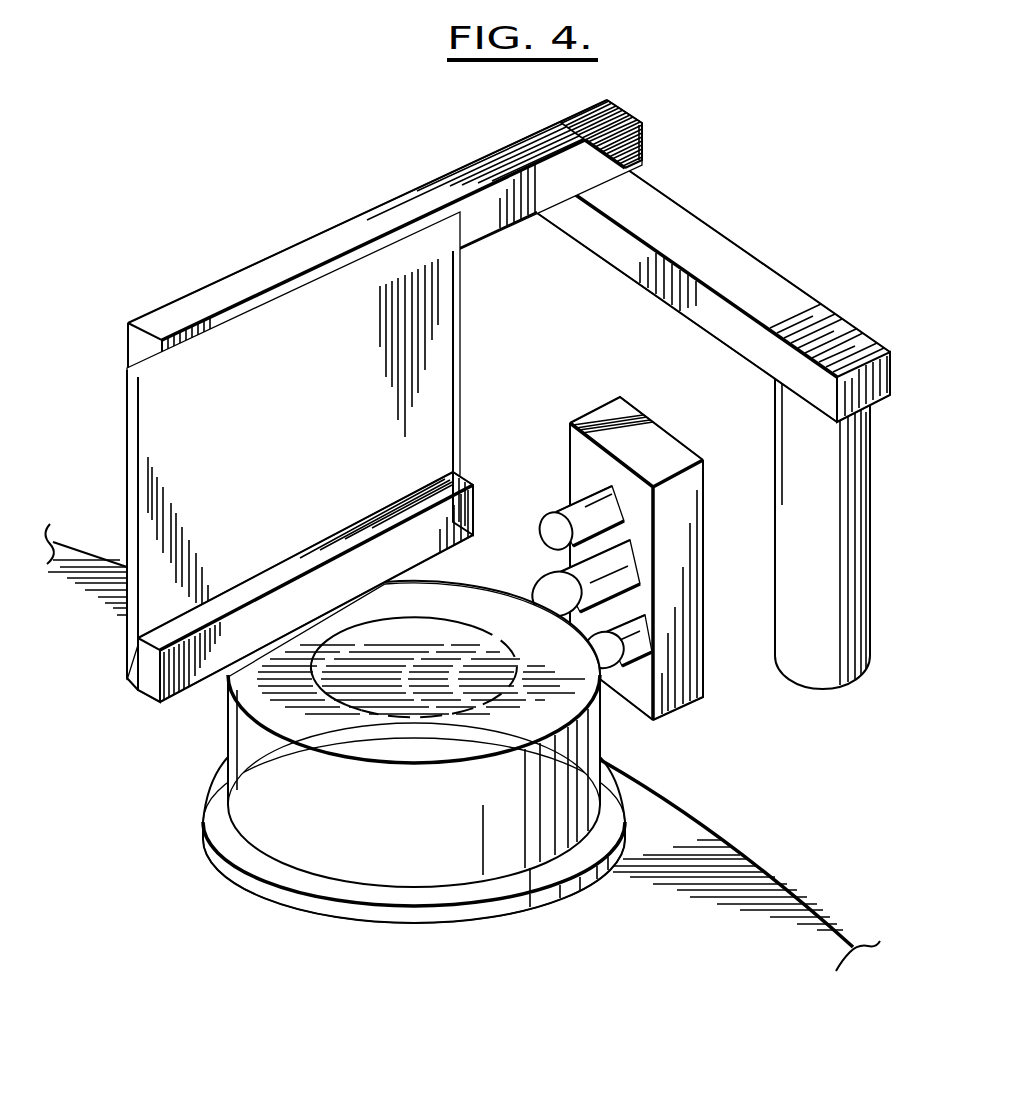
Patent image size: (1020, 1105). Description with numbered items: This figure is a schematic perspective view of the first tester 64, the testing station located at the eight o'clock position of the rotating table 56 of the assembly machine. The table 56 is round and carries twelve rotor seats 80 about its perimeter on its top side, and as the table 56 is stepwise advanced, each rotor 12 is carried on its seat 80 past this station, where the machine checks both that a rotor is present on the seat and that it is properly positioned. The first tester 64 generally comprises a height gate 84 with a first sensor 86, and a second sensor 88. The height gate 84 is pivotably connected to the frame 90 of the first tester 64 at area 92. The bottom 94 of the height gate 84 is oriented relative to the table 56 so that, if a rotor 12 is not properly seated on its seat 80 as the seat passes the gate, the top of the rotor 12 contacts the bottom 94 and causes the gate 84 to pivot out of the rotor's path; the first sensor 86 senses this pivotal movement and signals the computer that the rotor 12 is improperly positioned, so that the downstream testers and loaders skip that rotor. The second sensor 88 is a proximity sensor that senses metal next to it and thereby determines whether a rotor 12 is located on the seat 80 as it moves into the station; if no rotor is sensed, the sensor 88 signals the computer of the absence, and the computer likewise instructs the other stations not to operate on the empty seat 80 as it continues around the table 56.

The rotor 12 is at (412, 823).
The rotating table 56 is at (763, 900).
The first tester 64 is at (479, 427).
The rotor seat 80 is at (578, 873).
The height gate 84 is at (322, 426).
The first sensor 86 is at (640, 124).
The second sensor 88 is at (657, 424).
The frame 90 is at (745, 252).
The area 92 is at (530, 162).
The bottom of the height gate 94 is at (152, 682).